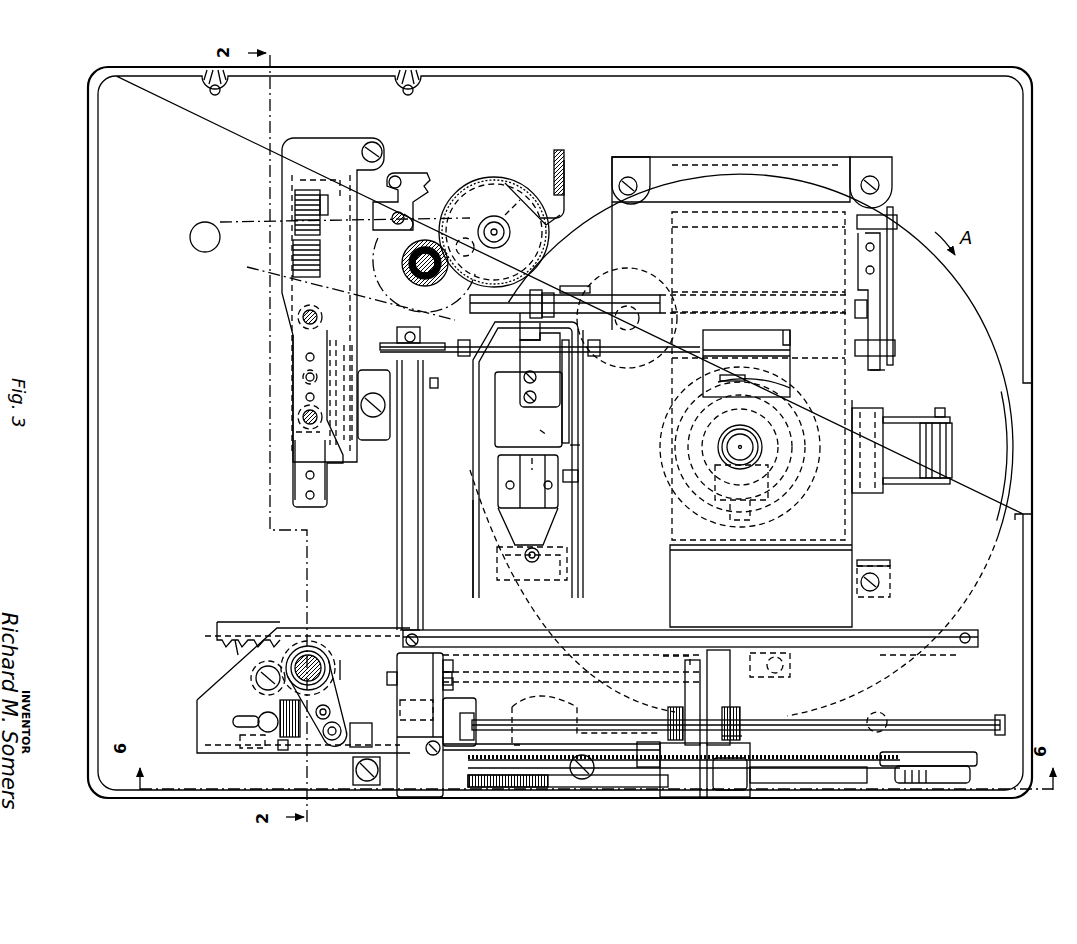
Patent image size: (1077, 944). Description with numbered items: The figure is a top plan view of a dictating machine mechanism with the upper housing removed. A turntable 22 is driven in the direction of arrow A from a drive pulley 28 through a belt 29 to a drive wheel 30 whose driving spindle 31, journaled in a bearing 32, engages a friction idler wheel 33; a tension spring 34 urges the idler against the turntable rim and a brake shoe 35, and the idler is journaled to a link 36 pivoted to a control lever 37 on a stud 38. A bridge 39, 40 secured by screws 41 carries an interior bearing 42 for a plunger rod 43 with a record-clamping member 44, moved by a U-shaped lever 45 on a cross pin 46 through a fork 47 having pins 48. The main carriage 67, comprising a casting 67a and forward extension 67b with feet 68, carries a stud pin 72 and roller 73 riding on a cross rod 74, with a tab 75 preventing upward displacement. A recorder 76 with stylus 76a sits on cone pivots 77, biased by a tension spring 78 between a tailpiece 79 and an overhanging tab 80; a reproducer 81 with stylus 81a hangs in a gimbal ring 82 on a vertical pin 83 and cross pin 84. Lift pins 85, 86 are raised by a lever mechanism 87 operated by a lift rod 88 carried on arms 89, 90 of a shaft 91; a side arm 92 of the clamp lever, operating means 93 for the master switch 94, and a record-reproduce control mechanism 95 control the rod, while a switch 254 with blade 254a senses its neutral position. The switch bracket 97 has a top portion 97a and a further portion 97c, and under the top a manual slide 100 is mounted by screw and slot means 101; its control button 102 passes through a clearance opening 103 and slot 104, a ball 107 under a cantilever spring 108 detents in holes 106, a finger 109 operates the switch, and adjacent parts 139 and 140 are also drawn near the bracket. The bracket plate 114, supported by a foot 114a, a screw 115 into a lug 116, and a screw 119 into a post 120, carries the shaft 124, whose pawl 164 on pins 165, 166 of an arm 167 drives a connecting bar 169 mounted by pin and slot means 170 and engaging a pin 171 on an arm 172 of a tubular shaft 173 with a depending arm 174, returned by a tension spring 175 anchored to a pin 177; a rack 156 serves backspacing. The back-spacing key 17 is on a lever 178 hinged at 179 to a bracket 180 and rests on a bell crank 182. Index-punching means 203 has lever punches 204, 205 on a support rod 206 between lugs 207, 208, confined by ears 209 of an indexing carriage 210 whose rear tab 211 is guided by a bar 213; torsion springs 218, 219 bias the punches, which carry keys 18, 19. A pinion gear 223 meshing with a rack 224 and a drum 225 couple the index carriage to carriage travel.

The back-spacing key 17 is at (405, 797).
The indexing key 18 is at (714, 797).
The indexing key 19 is at (672, 797).
The turntable 22 is at (960, 305).
The drive pulley 28 is at (205, 235).
The belt 29 is at (262, 272).
The drive wheel 30 is at (437, 314).
The driving spindle 31 is at (424, 284).
The bearing 32 is at (404, 271).
The friction idler wheel 33 is at (468, 183).
The tension spring 34 is at (548, 195).
The brake shoe 35 is at (512, 180).
The link 36 is at (482, 222).
The control lever 37 is at (436, 198).
The stud 38 is at (394, 225).
The bridge 39 is at (858, 525).
The bridge 40 is at (616, 168).
The screws 41 is at (618, 188).
The interior bearing 42 is at (718, 445).
The plunger rod 43 is at (754, 446).
The record-clamping member 44 is at (778, 500).
The U-shaped lever 45 is at (912, 412).
The cross pin 46 is at (875, 495).
The fork 47 is at (778, 380).
The pins 48 is at (758, 398).
The main carriage 67 is at (590, 435).
The hollow rectangular casting 67a is at (478, 528).
The forward extension 67b is at (572, 592).
The feet 68 is at (586, 715).
The stud pin 72 is at (534, 292).
The roller 73 is at (548, 292).
The cross rod 74 is at (572, 286).
The tab 75 is at (580, 270).
The recorder 76 is at (528, 409).
The stylus 76a is at (552, 434).
The cone pivots 77 is at (462, 360).
The tension spring 78 is at (508, 302).
The tailpiece 79 is at (545, 345).
The overhanging tab 80 is at (520, 338).
The reproducer 81 is at (528, 484).
The stylus 81a is at (537, 474).
The gimbal ring 82 is at (505, 530).
The vertical pin 83 is at (532, 548).
The cross pin 84 is at (497, 570).
The lift pin 85 is at (575, 424).
The lift pin 86 is at (580, 476).
The lever mechanism 87 is at (582, 447).
The lift rod 88 is at (714, 348).
The arm 89 is at (652, 255).
The arm 90 is at (895, 283).
The shaft 91 is at (757, 226).
The side arm 92 is at (785, 330).
The operating means 93 is at (282, 349).
The master switch 94 is at (405, 400).
The record-reproduce control mechanism 95 is at (230, 672).
The bracket 97 is at (330, 142).
The top portion 97a is at (296, 170).
The screw 97c is at (376, 445).
The manual slide 100 is at (310, 455).
The screw and slot means 101 is at (300, 316).
The control button 102 is at (295, 193).
The clearance opening 103 is at (293, 205).
The clearance slot 104 is at (322, 208).
The holes 106 is at (303, 396).
The ball 107 is at (334, 350).
The cantilever spring 108 is at (294, 433).
The finger 109 is at (360, 350).
The bracket plate 114 is at (198, 718).
The foot 114a is at (815, 782).
The screw 115 is at (882, 582).
The lug 116 is at (872, 558).
The screw 119 is at (266, 666).
The post 120 is at (240, 640).
The shaft 124 is at (318, 645).
The screw block 139 is at (410, 327).
The bar 140 is at (440, 343).
The rack 156 is at (216, 632).
The pawl 164 is at (340, 660).
The pin 165 is at (318, 742).
The pin 166 is at (332, 742).
The arm 167 is at (302, 650).
The connecting bar 169 is at (266, 712).
The pin and slot means 170 is at (262, 719).
The pin 171 is at (459, 721).
The arm 172 is at (416, 710).
The tubular shaft 173 is at (400, 565).
The depending arm 174 is at (455, 383).
The tension spring 175 is at (258, 750).
The pin 177 is at (286, 751).
The lever 178 is at (440, 662).
The hinge 179 is at (452, 684).
The bracket 180 is at (406, 631).
The bell crank 182 is at (365, 787).
The index-punching means 203 is at (745, 680).
The lever punch 204 is at (738, 665).
The lever punch 205 is at (660, 655).
The support rod 206 is at (918, 720).
The lug 207 is at (472, 718).
The lug 208 is at (995, 715).
The apertured ears 209 is at (672, 710).
The indexing carriage 210 is at (735, 692).
The rear tab 211 is at (705, 658).
The bar 213 is at (912, 630).
The torsion spring 218 is at (744, 736).
The torsion spring 219 is at (685, 690).
The pinion gear 223 is at (480, 770).
The rack 224 is at (545, 787).
The drum 225 is at (972, 770).
The switch 254 is at (882, 316).
The switch blade 254a is at (890, 370).